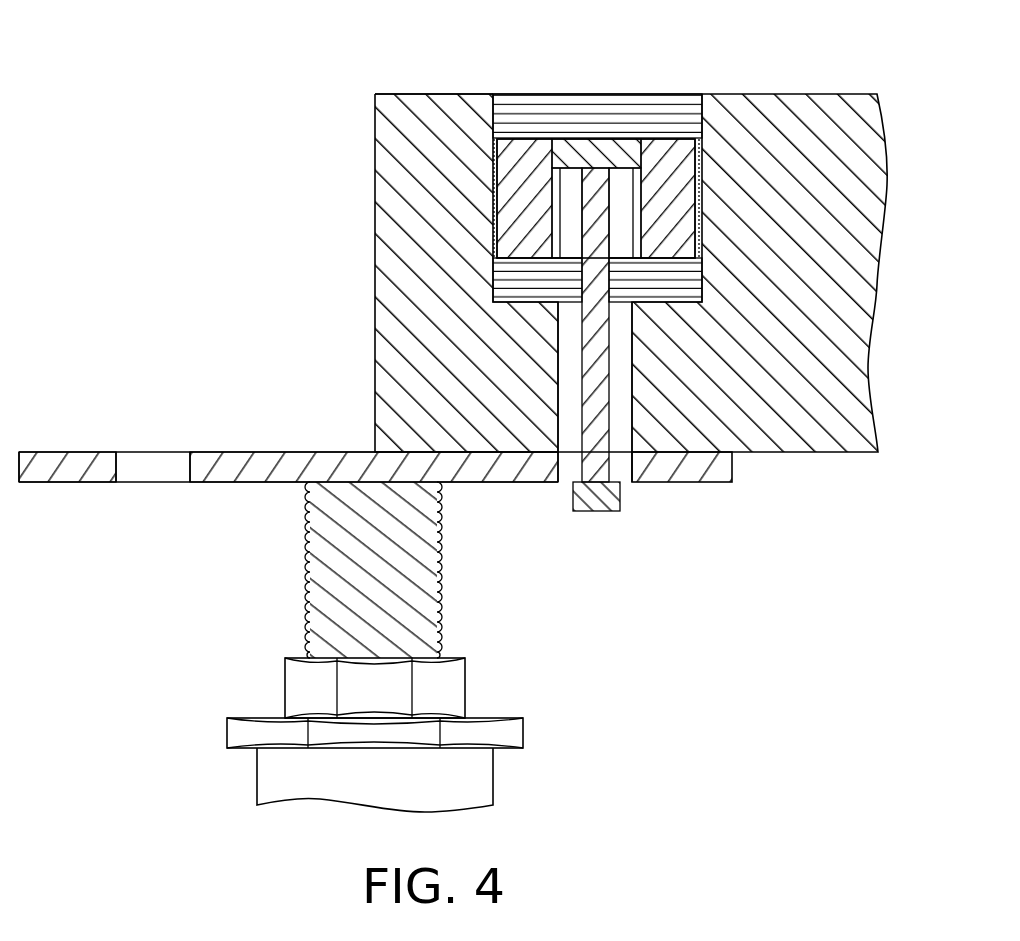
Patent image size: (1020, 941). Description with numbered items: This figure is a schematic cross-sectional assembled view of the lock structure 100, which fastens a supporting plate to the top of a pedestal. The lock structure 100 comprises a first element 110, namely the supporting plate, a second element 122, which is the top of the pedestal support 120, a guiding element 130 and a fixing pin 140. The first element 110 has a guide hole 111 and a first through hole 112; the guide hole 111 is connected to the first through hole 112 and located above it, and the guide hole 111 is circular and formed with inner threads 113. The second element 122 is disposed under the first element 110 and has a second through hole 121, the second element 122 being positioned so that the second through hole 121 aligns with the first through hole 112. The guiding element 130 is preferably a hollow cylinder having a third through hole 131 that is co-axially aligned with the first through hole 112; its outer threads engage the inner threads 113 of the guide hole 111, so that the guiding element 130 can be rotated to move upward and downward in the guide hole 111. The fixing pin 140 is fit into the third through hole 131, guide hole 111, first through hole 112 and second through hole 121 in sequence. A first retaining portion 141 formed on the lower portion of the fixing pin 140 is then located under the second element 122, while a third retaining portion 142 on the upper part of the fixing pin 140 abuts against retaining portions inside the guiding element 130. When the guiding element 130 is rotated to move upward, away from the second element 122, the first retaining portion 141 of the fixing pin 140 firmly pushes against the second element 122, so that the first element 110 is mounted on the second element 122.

The lock structure 100 is at (182, 93).
The first element 110 is at (374, 288).
The guide hole 111 is at (490, 106).
The first through hole 112 is at (565, 338).
The inner threads 113 is at (655, 118).
The pedestal support 120 is at (497, 776).
The second through hole 121 is at (157, 462).
The second element 122 is at (688, 484).
The guiding element 130 is at (516, 178).
The third through hole 131 is at (572, 210).
The fixing pin 140 is at (580, 380).
The first retaining portion 141 is at (598, 504).
The third retaining portion 142 is at (600, 147).